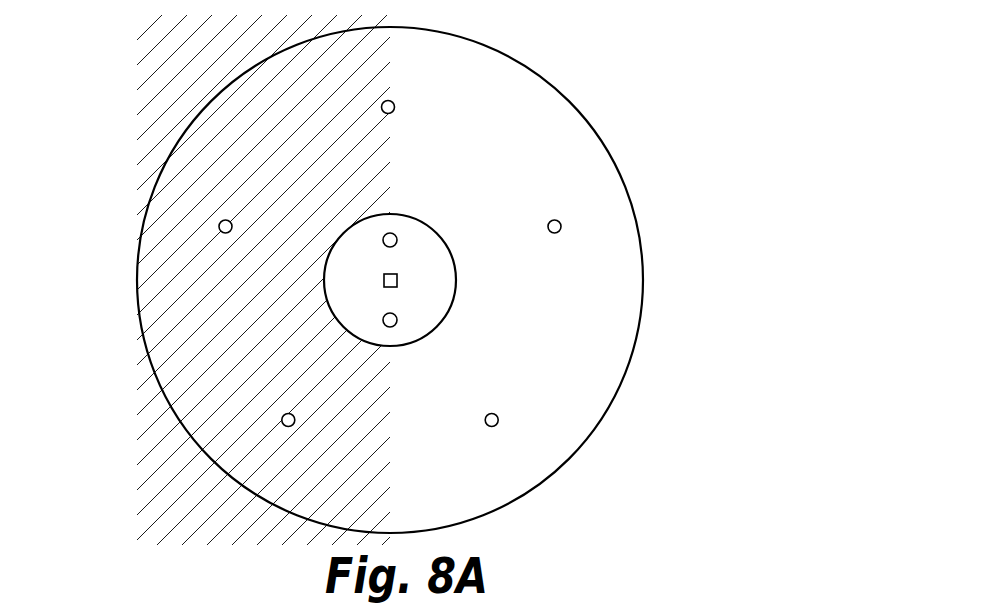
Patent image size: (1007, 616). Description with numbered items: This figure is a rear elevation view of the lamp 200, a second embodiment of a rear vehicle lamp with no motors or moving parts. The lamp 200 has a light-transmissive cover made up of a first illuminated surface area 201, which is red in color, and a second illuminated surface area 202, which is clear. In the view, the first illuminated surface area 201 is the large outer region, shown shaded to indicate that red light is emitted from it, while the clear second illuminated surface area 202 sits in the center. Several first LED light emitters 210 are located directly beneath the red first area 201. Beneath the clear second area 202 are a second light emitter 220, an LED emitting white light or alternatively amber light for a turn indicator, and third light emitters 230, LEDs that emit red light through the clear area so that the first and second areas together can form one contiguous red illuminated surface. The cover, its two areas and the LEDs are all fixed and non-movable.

The lamp 200 is at (468, 274).
The first illuminated surface area 201 is at (582, 133).
The second illuminated surface area 202 is at (423, 270).
The first LED light emitter 210 is at (219, 221).
The second light emitter 220 is at (383, 279).
The third light emitter 230 is at (383, 238).